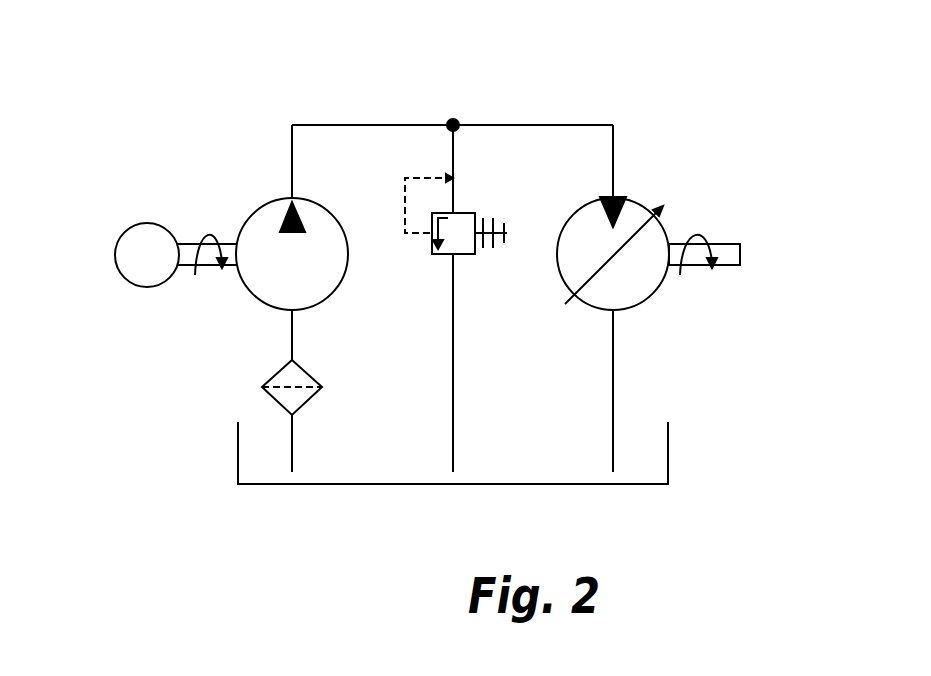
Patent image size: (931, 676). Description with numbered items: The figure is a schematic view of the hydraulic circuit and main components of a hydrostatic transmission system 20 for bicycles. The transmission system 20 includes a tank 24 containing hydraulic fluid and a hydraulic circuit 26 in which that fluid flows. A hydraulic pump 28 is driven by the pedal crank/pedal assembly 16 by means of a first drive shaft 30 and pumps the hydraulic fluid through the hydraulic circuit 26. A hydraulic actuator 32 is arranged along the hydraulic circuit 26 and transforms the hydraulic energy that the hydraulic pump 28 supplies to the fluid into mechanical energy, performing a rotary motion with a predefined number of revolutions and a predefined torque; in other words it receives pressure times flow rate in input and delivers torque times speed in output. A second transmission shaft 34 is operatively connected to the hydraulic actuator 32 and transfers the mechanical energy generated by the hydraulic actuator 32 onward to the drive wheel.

The pedal crank/pedal assembly 16 is at (118, 245).
The transmission system 20 is at (716, 439).
The tank 24 is at (352, 485).
The hydraulic circuit 26 is at (538, 125).
The hydraulic pump 28 is at (258, 207).
The first drive shaft 30 is at (205, 267).
The hydraulic actuator 32 is at (650, 295).
The second transmission shaft 34 is at (722, 243).